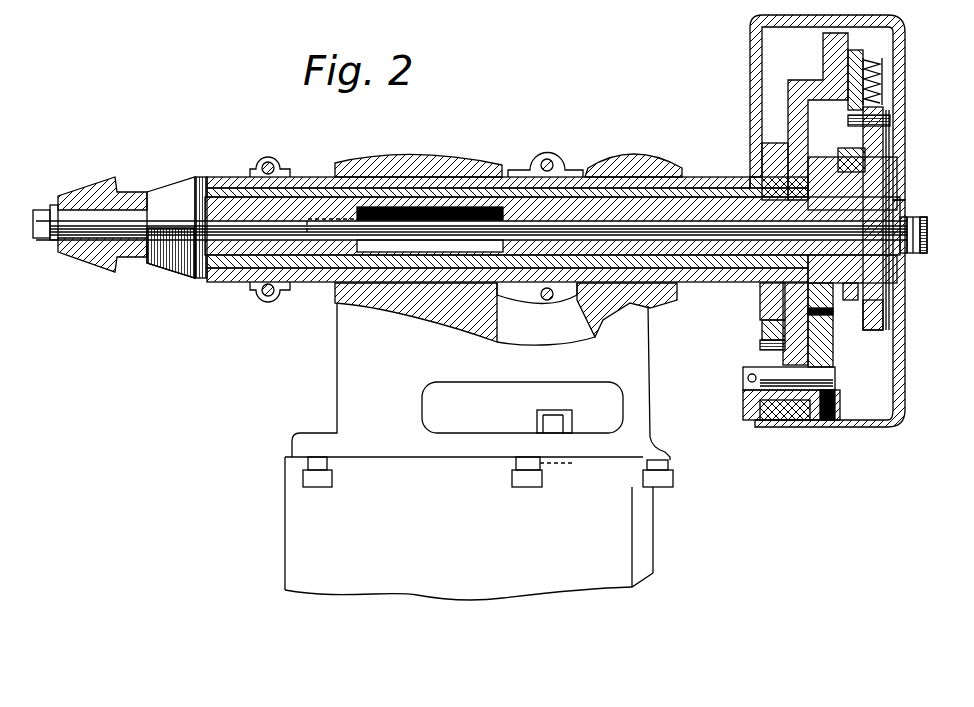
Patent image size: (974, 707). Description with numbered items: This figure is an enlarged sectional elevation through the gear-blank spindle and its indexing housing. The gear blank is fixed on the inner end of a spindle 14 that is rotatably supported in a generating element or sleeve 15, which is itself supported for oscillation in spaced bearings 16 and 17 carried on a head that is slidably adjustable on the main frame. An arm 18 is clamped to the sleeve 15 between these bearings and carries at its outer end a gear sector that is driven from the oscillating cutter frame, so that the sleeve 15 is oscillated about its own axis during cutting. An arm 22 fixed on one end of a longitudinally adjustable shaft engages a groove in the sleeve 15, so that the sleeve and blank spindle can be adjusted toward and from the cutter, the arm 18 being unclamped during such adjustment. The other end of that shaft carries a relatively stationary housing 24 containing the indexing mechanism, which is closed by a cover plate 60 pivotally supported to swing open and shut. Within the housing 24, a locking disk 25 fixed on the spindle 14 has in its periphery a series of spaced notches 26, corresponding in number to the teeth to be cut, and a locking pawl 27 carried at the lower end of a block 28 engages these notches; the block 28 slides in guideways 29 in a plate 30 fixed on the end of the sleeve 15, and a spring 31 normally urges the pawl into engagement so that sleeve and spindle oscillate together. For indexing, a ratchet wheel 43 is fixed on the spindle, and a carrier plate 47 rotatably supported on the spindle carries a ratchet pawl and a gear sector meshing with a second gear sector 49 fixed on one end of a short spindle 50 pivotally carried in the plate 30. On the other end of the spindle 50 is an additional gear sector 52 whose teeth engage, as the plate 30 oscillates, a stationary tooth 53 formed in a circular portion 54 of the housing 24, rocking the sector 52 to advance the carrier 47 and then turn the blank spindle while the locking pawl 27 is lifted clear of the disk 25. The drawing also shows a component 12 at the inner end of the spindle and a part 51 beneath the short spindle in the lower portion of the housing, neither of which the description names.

The nose collet 12 is at (100, 253).
The spindle 14 is at (707, 212).
The generating sleeve 15 is at (299, 176).
The bearing 16 is at (636, 158).
The bearing 17 is at (432, 156).
The arm 18 is at (527, 160).
The arm 22 is at (257, 166).
The housing 24 is at (749, 71).
The locking disk 25 is at (885, 300).
The notches 26 is at (884, 328).
The locking pawl 27 is at (862, 153).
The block 28 is at (890, 132).
The guideways 29 is at (857, 72).
The plate 30 is at (812, 82).
The spring 31 is at (883, 75).
The ratchet wheel 43 is at (849, 298).
The carrier plate 47 is at (833, 312).
The second gear sector 49 is at (827, 348).
The short spindle 50 is at (823, 378).
The bracket 51 is at (797, 422).
The additional gear sector 52 is at (760, 341).
The stationary tooth 53 is at (760, 337).
The circular portion 54 is at (777, 318).
The cover plate 60 is at (899, 405).